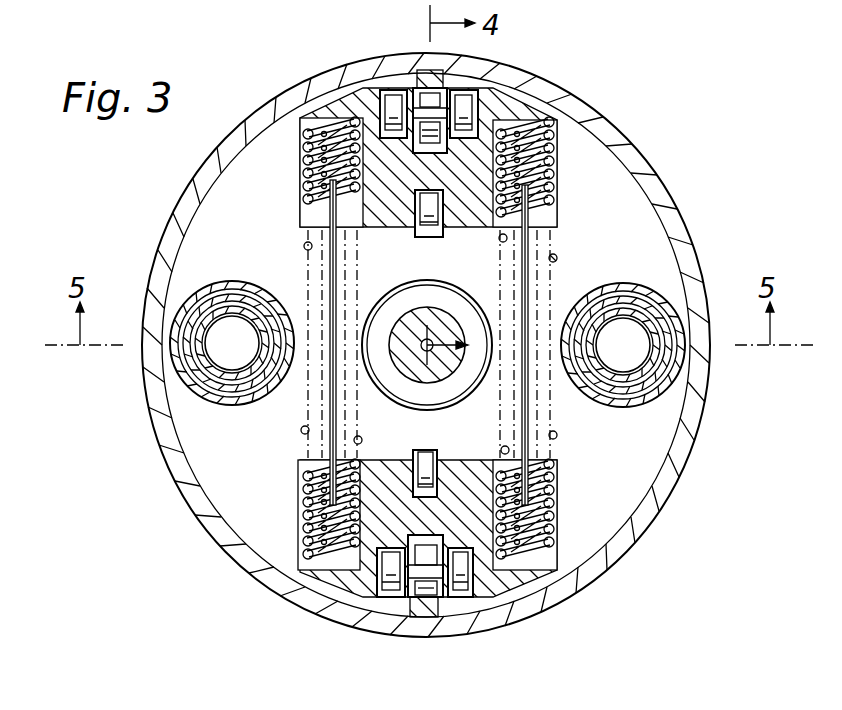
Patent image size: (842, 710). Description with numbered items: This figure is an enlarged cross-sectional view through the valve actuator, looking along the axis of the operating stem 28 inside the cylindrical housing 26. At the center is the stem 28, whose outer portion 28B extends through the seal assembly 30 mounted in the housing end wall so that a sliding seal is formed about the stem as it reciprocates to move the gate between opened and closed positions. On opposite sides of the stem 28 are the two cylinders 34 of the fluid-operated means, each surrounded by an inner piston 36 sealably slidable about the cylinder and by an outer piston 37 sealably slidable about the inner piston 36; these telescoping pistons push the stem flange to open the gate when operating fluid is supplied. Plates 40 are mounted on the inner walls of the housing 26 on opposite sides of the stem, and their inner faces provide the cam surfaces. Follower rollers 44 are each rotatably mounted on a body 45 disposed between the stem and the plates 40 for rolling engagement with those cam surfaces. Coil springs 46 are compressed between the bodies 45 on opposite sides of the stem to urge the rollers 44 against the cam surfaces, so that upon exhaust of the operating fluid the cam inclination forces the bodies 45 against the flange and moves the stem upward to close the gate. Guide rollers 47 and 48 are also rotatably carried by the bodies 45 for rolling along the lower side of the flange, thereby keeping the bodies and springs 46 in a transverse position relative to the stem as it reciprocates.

The cylindrical housing 26 is at (186, 184).
The operating stem 28 is at (410, 384).
The outer portion of the stem 28B is at (432, 308).
The seal assembly 30 is at (388, 288).
The cylinder 34 is at (240, 314).
The inner piston 36 is at (236, 396).
The outer piston 37 is at (256, 404).
The plate 40 is at (470, 612).
The roller 44 is at (430, 612).
The body 45 is at (357, 597).
The coil spring 46 is at (558, 257).
The guide roller 47 is at (426, 238).
The guide roller 48 is at (463, 97).